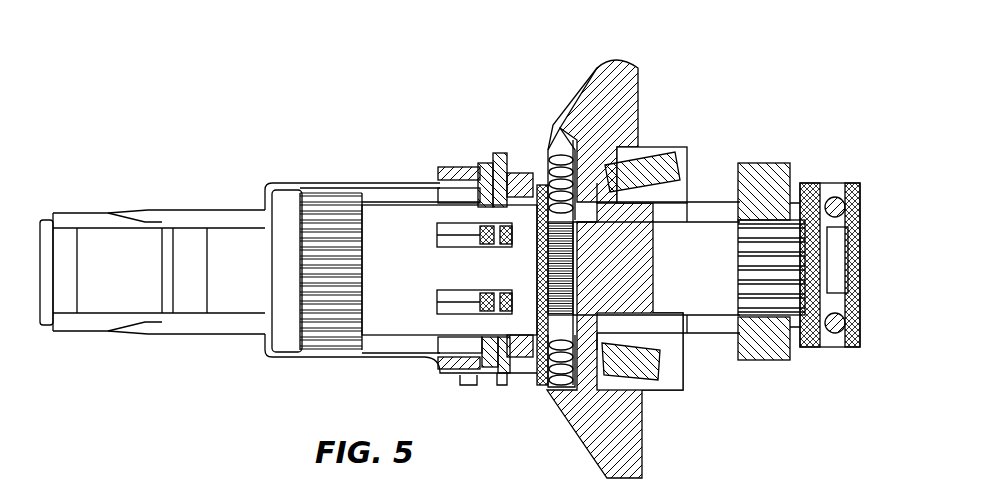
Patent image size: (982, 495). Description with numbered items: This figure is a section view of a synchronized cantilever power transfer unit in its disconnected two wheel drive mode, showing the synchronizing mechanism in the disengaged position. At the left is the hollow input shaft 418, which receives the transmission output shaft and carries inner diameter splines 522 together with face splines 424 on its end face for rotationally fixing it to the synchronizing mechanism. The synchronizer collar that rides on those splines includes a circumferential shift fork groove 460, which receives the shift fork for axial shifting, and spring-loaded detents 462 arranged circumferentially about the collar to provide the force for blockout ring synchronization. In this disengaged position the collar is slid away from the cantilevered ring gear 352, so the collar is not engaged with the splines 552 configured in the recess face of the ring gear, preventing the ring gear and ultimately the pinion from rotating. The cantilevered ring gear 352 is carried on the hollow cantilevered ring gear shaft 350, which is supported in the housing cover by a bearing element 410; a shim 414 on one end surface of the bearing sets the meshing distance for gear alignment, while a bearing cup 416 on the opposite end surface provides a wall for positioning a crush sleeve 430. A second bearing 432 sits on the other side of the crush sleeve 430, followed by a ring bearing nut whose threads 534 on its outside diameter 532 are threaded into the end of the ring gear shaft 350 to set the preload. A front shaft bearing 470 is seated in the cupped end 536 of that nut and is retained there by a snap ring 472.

The input shaft 418 is at (200, 216).
The inner diameter splines 522 is at (322, 192).
The face splines 424 is at (423, 180).
The detents 462 is at (465, 160).
The shift fork groove 460 is at (490, 158).
The shim 414 is at (563, 140).
The cantilevered ring gear 352 is at (592, 74).
The cantilevered ring gear shaft 350 is at (655, 150).
The bearing element 410 is at (682, 147).
The bearing cup 416 is at (686, 392).
The crush sleeve 430 is at (707, 347).
The second bearing 432 is at (760, 352).
The threads 534 is at (783, 163).
The outside diameter 532 is at (793, 343).
The cupped end 536 is at (838, 190).
The splines 552 is at (550, 383).
The front shaft bearing 470 is at (848, 347).
The snap ring 472 is at (860, 302).